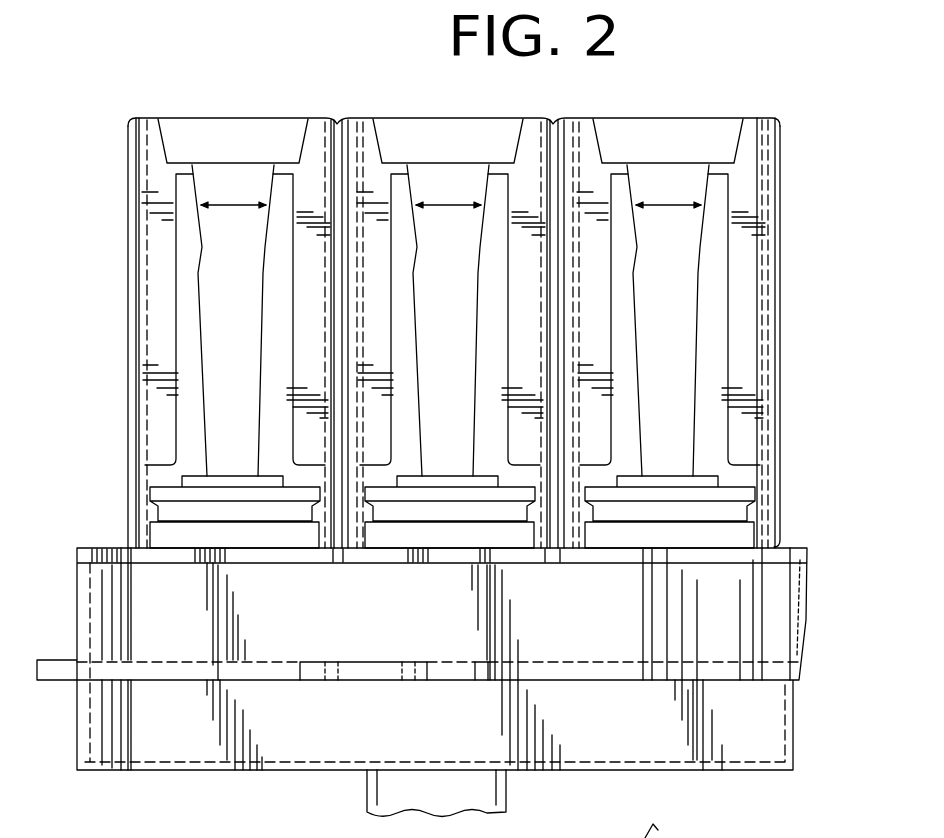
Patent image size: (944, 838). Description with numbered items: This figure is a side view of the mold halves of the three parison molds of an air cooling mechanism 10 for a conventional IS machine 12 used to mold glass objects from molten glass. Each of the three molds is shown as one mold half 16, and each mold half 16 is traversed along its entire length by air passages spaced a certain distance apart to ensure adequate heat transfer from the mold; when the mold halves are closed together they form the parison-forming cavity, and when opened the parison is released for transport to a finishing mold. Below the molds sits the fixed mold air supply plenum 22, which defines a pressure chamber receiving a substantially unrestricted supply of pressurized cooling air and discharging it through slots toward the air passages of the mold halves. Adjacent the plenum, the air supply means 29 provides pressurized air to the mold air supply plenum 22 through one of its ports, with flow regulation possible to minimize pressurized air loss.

The air cooling mechanism 10 is at (453, 682).
The IS machine 12 is at (488, 312).
The mold half 16 is at (752, 122).
The mold air supply plenum 22 is at (102, 608).
The air supply means 29 is at (102, 723).